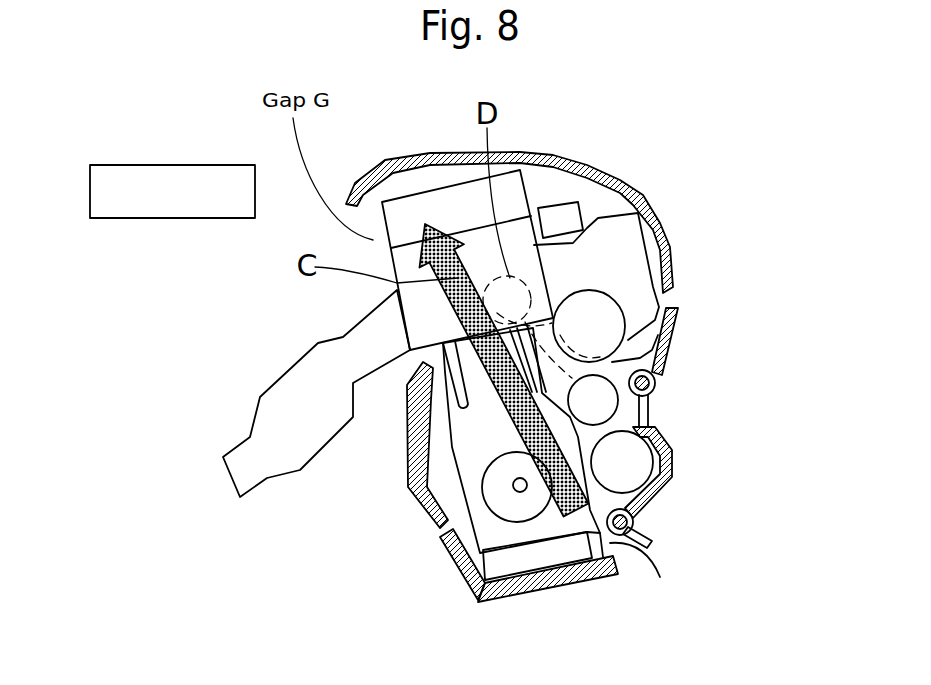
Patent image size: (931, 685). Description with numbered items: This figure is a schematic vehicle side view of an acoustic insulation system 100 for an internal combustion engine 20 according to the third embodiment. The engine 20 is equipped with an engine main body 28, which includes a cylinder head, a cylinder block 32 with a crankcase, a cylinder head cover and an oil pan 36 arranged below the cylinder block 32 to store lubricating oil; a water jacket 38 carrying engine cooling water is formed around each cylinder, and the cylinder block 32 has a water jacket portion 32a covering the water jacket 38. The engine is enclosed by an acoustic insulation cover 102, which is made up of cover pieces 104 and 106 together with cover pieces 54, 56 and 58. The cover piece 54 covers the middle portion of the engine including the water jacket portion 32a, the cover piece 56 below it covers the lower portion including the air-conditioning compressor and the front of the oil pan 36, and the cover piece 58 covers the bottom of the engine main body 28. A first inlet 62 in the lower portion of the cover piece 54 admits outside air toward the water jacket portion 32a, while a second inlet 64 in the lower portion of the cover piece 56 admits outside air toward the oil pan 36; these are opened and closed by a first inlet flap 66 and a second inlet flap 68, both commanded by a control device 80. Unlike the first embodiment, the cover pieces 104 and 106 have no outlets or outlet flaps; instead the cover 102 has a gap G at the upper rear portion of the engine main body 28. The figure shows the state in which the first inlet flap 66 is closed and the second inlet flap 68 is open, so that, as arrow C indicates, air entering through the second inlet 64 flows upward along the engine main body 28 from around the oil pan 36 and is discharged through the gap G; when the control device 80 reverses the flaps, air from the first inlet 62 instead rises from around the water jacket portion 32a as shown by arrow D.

The internal combustion engine 20 is at (370, 290).
The engine main body 28 is at (533, 192).
The cylinder block 32 is at (443, 467).
The water jacket portion 32a is at (533, 382).
The oil pan 36 is at (510, 567).
The water jacket 38 is at (447, 410).
The cover piece 54 is at (677, 352).
The cover piece 56 is at (674, 465).
The cover piece 58 is at (563, 585).
The first inlet 62 is at (650, 413).
The second inlet 64 is at (613, 545).
The first inlet flap 66 is at (657, 384).
The second inlet flap 68 is at (636, 530).
The control device 80 is at (208, 163).
The acoustic insulation system 100 is at (708, 160).
The acoustic insulation cover 102 is at (618, 162).
The cover piece 104 is at (670, 247).
The cover piece 106 is at (440, 537).